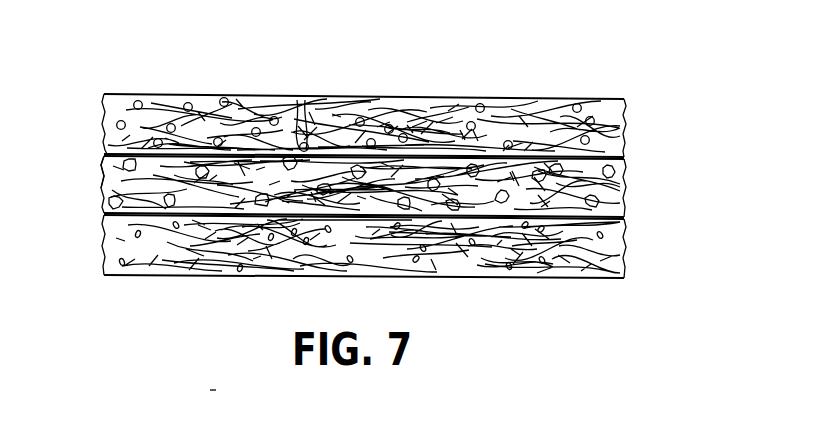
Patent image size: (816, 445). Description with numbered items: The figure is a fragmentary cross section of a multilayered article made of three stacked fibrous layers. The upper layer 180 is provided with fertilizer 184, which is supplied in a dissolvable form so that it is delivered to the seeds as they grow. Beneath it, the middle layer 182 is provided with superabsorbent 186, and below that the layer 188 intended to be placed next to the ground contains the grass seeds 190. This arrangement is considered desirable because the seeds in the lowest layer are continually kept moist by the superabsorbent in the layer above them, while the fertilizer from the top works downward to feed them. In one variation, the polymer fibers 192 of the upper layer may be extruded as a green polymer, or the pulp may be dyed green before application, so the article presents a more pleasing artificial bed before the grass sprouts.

The upper layer 180 is at (625, 122).
The middle layer 182 is at (625, 180).
The fertilizer 184 is at (186, 102).
The superabsorbent 186 is at (108, 168).
The layer to be placed next to the ground 188 is at (625, 250).
The grass seeds 190 is at (122, 267).
The polymer fibers 192 is at (306, 100).